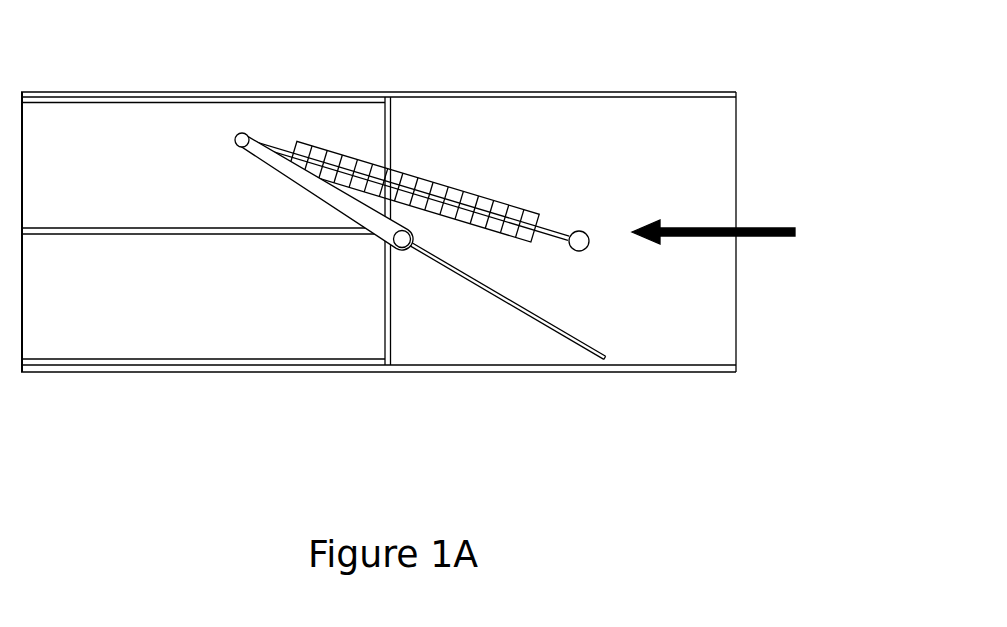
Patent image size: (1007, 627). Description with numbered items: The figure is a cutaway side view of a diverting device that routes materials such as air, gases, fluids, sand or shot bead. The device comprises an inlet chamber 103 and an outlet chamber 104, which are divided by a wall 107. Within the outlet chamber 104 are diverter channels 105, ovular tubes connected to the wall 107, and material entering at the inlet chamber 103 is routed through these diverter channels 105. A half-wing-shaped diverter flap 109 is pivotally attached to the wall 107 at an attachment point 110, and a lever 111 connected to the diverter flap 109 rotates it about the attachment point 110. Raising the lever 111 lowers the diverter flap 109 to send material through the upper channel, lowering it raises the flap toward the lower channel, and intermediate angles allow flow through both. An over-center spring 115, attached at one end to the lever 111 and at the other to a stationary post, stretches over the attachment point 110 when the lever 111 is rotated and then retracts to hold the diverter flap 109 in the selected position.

The inlet chamber 103 is at (423, 132).
The outlet chamber 104 is at (57, 103).
The diverter channels 105 is at (113, 293).
The wall 107 is at (383, 328).
The diverter flap 109 is at (457, 262).
The attachment point 110 is at (399, 249).
The lever 111 is at (360, 168).
The spring 115 is at (612, 160).